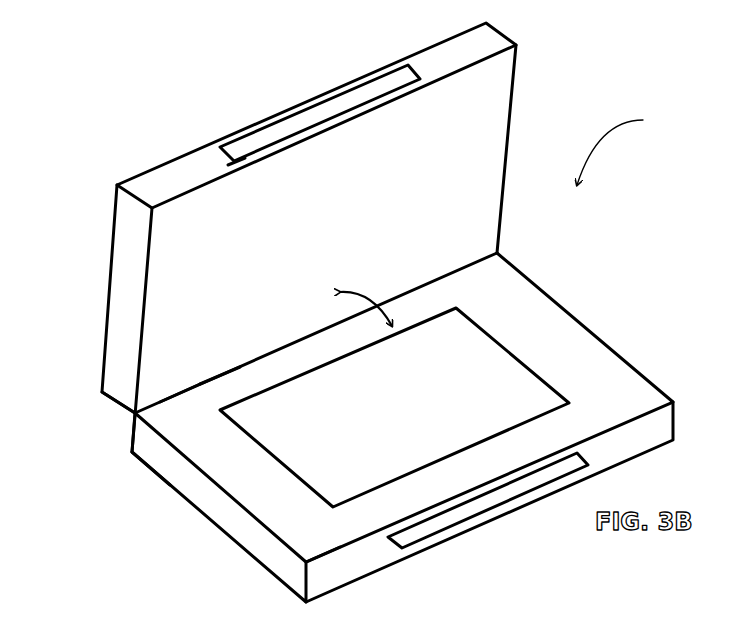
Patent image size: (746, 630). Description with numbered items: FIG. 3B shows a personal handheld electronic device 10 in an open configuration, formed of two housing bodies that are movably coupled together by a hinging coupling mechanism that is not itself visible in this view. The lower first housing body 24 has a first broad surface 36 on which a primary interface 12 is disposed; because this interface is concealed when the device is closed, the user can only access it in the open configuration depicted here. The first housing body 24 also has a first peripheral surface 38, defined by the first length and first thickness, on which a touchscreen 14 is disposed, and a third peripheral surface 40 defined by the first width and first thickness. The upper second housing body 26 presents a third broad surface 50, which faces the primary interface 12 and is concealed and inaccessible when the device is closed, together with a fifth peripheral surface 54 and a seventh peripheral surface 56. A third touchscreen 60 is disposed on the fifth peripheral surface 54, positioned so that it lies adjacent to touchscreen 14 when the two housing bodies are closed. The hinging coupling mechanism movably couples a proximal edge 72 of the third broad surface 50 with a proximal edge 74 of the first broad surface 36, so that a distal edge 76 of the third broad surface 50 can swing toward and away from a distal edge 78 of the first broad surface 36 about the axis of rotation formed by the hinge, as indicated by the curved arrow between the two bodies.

The device 10 is at (626, 148).
The primary interface 12 is at (378, 408).
The touchscreen 14 is at (532, 483).
The first housing body 24 is at (152, 475).
The second housing body 26 is at (123, 412).
The first broad surface 36 is at (565, 378).
The first peripheral surface 38 is at (611, 452).
The third peripheral surface 40 is at (225, 530).
The third broad surface 50 is at (316, 246).
The fifth peripheral surface 54 is at (444, 62).
The seventh peripheral surface 56 is at (113, 302).
The third touchscreen 60 is at (274, 130).
The proximal edge of third broad surface 72 is at (170, 388).
The proximal edge of first broad surface 74 is at (207, 386).
The distal edge of third broad surface 76 is at (233, 177).
The distal edge of first broad surface 78 is at (327, 552).